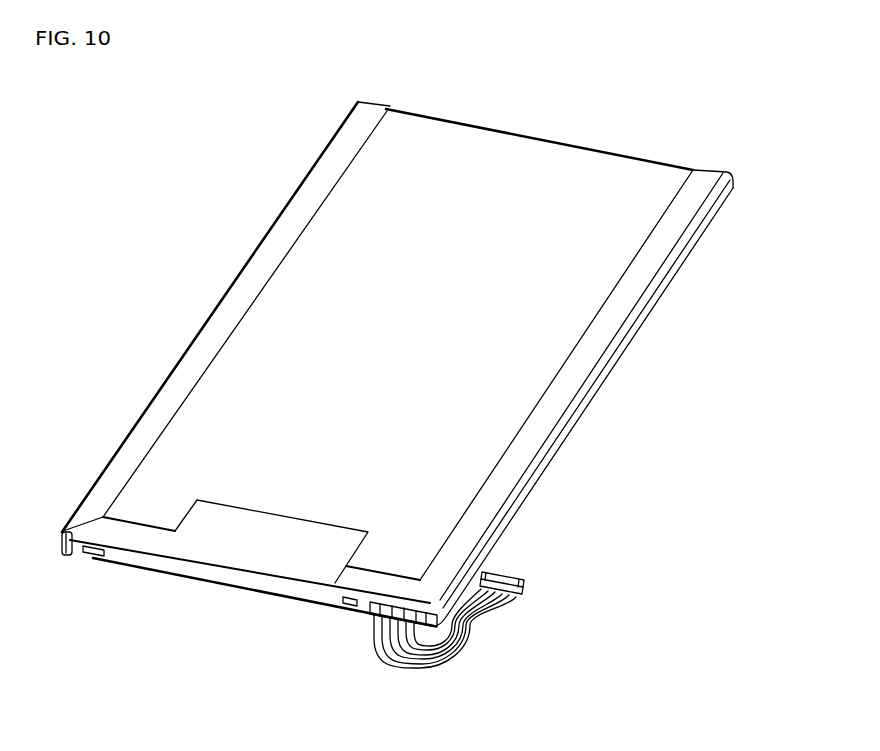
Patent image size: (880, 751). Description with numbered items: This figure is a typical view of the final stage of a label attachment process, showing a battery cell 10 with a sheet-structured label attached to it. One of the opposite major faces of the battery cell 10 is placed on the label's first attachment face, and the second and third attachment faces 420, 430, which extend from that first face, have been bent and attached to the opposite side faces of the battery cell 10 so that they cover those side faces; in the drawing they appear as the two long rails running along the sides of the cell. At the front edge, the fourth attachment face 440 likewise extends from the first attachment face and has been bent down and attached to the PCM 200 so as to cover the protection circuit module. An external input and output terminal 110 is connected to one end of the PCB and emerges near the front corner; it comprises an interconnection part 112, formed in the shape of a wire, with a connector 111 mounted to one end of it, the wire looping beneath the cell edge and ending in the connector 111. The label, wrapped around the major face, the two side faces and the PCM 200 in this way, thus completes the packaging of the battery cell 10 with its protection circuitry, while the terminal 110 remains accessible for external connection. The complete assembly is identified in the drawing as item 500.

The battery cell 10 is at (428, 358).
The external input and output terminal 110 is at (528, 624).
The connector 111 is at (525, 583).
The interconnection part 112 is at (470, 633).
The PCM 200 is at (65, 558).
The second attachment face 420 is at (567, 413).
The third attachment face 430 is at (192, 355).
The fourth attachment face 440 is at (265, 554).
The display module 500 is at (135, 192).